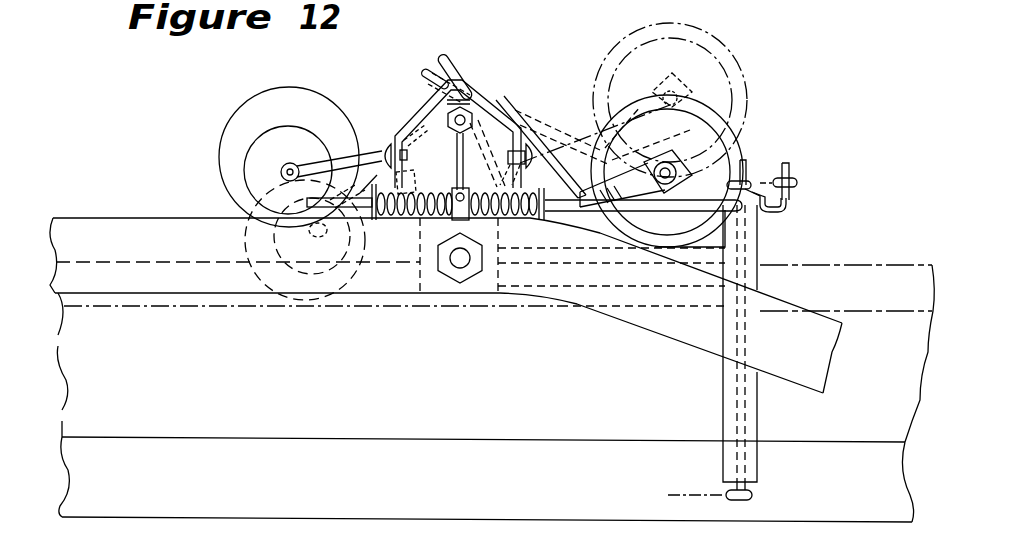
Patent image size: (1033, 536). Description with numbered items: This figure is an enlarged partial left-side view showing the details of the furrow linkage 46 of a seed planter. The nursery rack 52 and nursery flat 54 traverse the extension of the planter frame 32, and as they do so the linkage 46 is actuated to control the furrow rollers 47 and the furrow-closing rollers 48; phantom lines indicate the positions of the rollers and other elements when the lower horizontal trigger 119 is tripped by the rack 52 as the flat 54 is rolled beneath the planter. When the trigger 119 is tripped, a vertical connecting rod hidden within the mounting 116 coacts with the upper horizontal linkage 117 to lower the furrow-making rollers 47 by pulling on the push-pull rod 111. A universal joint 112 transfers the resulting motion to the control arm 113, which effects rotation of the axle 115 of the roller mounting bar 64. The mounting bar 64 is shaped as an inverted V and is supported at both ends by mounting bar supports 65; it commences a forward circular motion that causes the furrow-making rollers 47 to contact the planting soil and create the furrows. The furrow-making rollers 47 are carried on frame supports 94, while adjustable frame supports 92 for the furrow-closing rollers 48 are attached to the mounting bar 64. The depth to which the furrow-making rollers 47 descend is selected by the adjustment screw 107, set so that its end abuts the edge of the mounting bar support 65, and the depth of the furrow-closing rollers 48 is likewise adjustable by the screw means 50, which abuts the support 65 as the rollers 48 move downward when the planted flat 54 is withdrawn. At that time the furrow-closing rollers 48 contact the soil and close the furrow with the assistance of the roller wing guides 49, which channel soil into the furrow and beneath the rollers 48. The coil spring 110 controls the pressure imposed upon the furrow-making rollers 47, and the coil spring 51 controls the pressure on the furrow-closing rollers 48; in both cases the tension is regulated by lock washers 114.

The planter frame 32 is at (122, 218).
The linkage 46 is at (800, 192).
The furrow rollers 47 is at (263, 103).
The furrow-closing rollers 48 is at (737, 143).
The roller wing guides 49 is at (667, 187).
The screw means 50 is at (533, 140).
The coil spring 51 is at (518, 217).
The nursery rack 52 is at (468, 442).
The nursery flat 54 is at (878, 265).
The roller mounting bar 64 is at (475, 94).
The mounting bar supports 65 is at (492, 156).
The adjustable frame supports 92 is at (447, 57).
The frame supports 94 is at (368, 143).
The adjustment screw 107 is at (393, 146).
The coil spring 110 is at (384, 228).
The push-pull rod 111 is at (750, 163).
The universal joint 112 is at (458, 205).
The control arm 113 is at (460, 173).
The lock washers 114 is at (367, 220).
The axle 115 is at (470, 123).
The mounting 116 is at (758, 410).
The upper horizontal linkage 117 is at (767, 205).
The lower horizontal trigger 119 is at (753, 490).